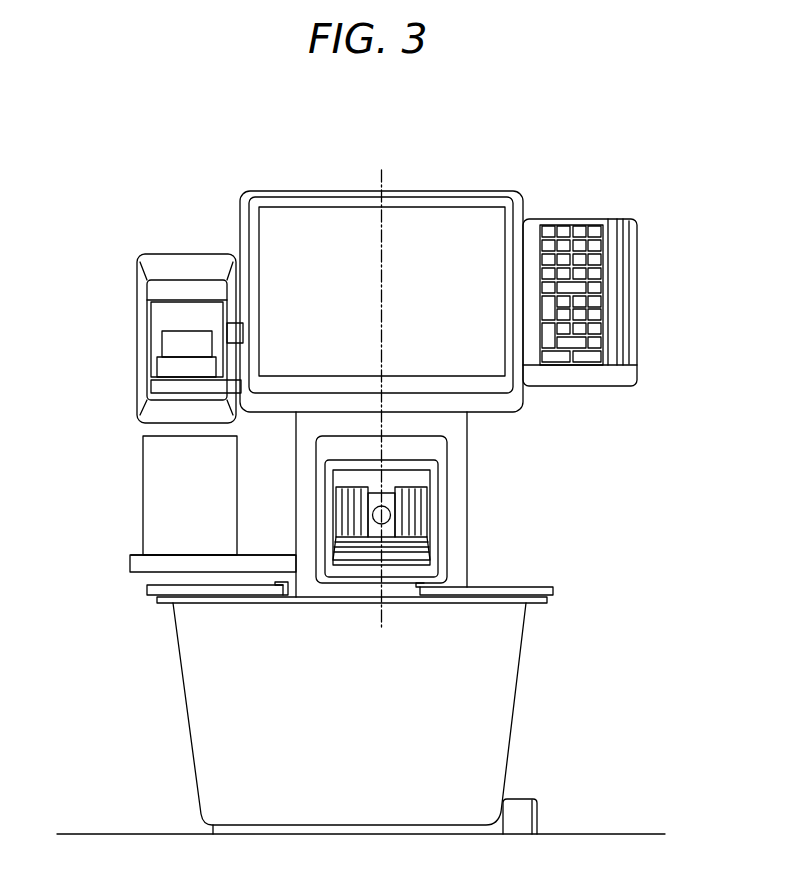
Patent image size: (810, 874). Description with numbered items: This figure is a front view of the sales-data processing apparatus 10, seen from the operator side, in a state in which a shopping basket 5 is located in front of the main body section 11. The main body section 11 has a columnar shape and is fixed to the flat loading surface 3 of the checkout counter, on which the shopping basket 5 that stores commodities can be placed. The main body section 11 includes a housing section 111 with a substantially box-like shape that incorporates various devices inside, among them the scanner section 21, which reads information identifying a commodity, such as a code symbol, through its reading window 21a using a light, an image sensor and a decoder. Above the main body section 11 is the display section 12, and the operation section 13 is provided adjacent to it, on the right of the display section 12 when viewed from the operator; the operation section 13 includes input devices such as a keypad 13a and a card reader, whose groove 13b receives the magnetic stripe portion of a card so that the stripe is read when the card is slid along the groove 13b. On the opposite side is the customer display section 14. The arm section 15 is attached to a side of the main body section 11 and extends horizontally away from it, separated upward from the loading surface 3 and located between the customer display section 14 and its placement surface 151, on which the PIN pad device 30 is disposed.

The sales-data processing apparatus 10 is at (469, 162).
The display section 12 is at (303, 191).
The operation section 13 is at (619, 270).
The keypad 13a is at (579, 301).
The groove 13b is at (620, 243).
The customer display section 14 is at (193, 254).
The main body section 11 is at (467, 424).
The housing section 111 is at (460, 488).
The scanner section 21 is at (453, 526).
The reading window 21a is at (433, 560).
The PIN pad device 30 is at (140, 469).
The arm section 15 is at (168, 540).
The placement surface 151 is at (266, 555).
The shopping basket 5 is at (498, 693).
The loading surface 3 is at (123, 833).